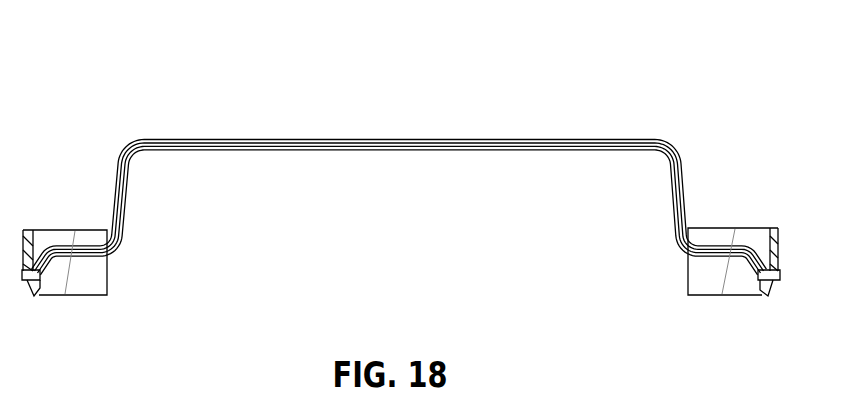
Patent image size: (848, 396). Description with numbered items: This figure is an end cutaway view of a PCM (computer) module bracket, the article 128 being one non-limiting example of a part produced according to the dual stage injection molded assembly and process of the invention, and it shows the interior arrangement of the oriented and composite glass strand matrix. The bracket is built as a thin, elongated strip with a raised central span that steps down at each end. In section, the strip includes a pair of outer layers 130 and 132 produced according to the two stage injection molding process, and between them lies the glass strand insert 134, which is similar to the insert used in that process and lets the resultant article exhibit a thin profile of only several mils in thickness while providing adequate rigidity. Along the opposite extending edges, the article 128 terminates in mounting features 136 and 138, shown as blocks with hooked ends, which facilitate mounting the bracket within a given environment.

The PCM module bracket 128 is at (198, 76).
The outer layer 130 is at (402, 138).
The outer layer 132 is at (411, 151).
The glass strand insert 134 is at (378, 151).
The mounting feature 136 is at (55, 229).
The mounting feature 138 is at (747, 228).